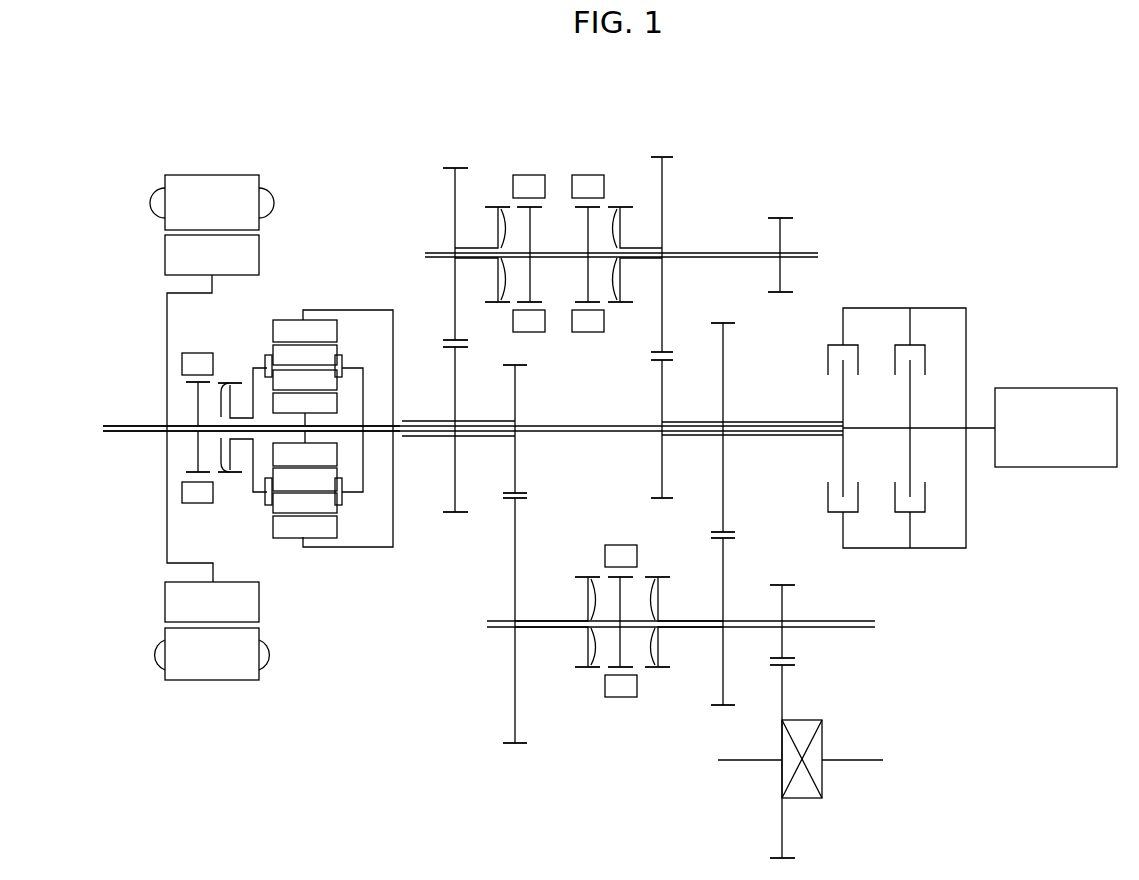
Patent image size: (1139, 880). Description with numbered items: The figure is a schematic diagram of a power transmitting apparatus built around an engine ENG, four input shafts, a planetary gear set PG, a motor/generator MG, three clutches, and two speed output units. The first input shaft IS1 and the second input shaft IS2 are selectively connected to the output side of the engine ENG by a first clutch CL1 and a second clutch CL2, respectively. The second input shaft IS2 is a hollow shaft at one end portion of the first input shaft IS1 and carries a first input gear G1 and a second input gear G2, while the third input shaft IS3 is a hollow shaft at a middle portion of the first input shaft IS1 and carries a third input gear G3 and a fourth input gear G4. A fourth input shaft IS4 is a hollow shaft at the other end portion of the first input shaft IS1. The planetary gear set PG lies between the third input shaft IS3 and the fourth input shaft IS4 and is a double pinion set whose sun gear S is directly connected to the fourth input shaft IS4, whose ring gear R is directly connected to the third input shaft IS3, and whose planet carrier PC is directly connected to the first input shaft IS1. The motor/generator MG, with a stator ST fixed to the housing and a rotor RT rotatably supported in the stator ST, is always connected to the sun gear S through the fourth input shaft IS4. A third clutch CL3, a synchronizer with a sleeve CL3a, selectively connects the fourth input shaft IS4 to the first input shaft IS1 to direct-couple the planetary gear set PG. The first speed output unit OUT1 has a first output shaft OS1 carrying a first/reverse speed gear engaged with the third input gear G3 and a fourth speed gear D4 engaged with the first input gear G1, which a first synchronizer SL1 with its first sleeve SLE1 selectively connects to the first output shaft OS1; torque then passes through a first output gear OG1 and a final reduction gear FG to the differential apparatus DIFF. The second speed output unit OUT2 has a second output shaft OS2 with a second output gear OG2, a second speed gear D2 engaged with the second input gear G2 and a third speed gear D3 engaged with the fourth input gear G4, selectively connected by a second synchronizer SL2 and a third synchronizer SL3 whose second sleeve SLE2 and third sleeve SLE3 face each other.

The motor/generator MG is at (180, 225).
The stator ST is at (212, 202).
The rotor RT is at (212, 255).
The planetary gear set PG is at (305, 385).
The ring gear R is at (271, 328).
The planet carrier PC is at (266, 360).
The sun gear S is at (271, 403).
The third clutch CL3 is at (148, 348).
The sleeve CL3a is at (197, 504).
The fourth input shaft IS4 is at (178, 420).
The third input shaft IS3 is at (421, 420).
The first input shaft IS1 is at (580, 434).
The second input shaft IS2 is at (795, 437).
The third speed gear D3 is at (453, 185).
The fourth input gear G4 is at (453, 470).
The third input gear G3 is at (513, 466).
The second input gear G2 is at (667, 463).
The first input gear G1 is at (727, 488).
The third synchronizer SL3 is at (492, 179).
The third sleeve SLE3 is at (521, 172).
The second synchronizer SL2 is at (625, 171).
The second sleeve SLE2 is at (591, 173).
The first synchronizer SL1 is at (590, 730).
The first sleeve SLE1 is at (621, 700).
The second speed gear D2 is at (668, 183).
The fourth speed gear D4 is at (721, 672).
The second output shaft OS2 is at (724, 250).
The first output shaft OS1 is at (748, 615).
The second output gear OG2 is at (786, 242).
The first output gear OG1 is at (788, 610).
The second speed output unit OUT2 is at (895, 244).
The first speed output unit OUT1 is at (908, 618).
The final reduction gear FG is at (788, 700).
The differential apparatus DIFF is at (826, 740).
The second clutch CL2 is at (864, 335).
The first clutch CL1 is at (932, 331).
The engine ENG is at (980, 427).